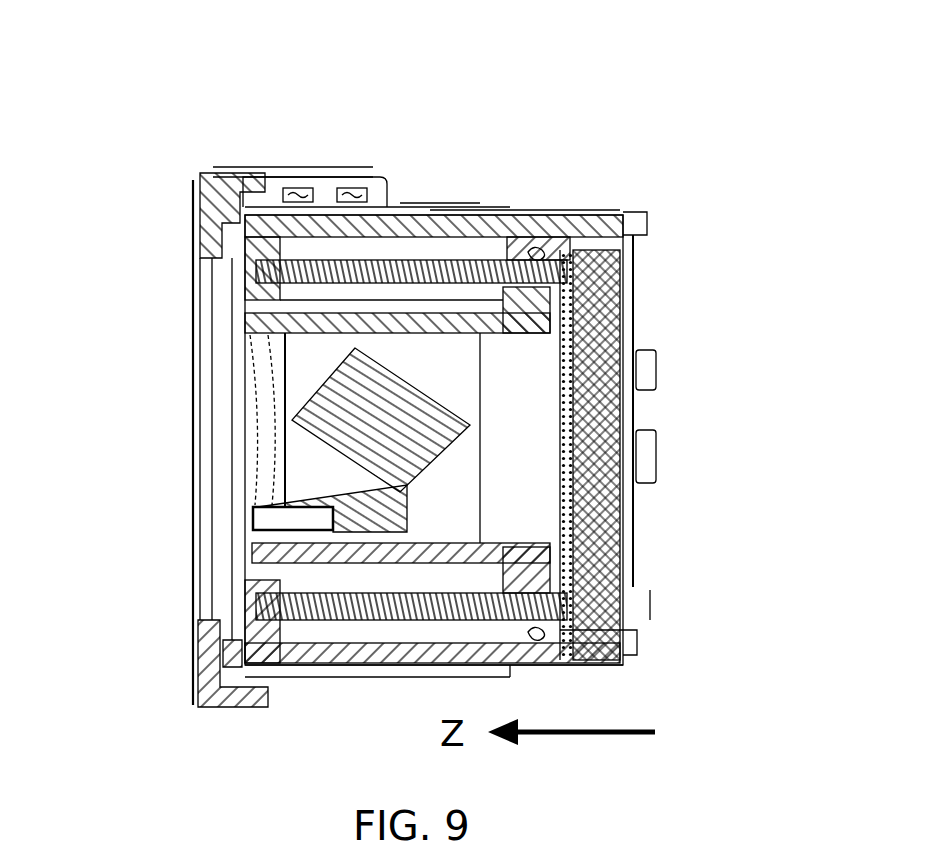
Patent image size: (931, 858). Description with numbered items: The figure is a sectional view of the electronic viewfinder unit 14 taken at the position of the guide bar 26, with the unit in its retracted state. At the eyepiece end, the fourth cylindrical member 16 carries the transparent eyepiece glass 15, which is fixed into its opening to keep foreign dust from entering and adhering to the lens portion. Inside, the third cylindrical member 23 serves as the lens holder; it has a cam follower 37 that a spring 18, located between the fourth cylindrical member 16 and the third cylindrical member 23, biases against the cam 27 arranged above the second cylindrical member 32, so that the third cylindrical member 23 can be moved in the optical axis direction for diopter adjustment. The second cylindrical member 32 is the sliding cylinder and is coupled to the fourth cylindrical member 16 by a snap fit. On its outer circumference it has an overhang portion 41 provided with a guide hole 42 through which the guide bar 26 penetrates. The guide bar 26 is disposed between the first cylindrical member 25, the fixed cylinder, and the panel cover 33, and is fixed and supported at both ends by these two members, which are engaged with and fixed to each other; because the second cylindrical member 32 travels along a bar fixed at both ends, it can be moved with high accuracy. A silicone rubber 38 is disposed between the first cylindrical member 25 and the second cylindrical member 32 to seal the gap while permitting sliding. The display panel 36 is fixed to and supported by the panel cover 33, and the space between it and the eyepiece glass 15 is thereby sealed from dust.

The electronic viewfinder unit 14 is at (770, 44).
The eyepiece glass 15 is at (215, 325).
The fourth cylindrical member 16 is at (224, 165).
The spring 18 is at (285, 535).
The third cylindrical member 23 is at (275, 580).
The first cylindrical member 25 is at (325, 232).
The guide bar 26 is at (385, 270).
The cam 27 is at (327, 468).
The second cylindrical member 32 is at (437, 325).
The panel cover 33 is at (574, 232).
The display panel 36 is at (640, 238).
The cam follower 37 is at (290, 447).
The silicone rubber 38 is at (532, 245).
The overhang portion 41 is at (554, 247).
The guide hole 42 is at (508, 240).